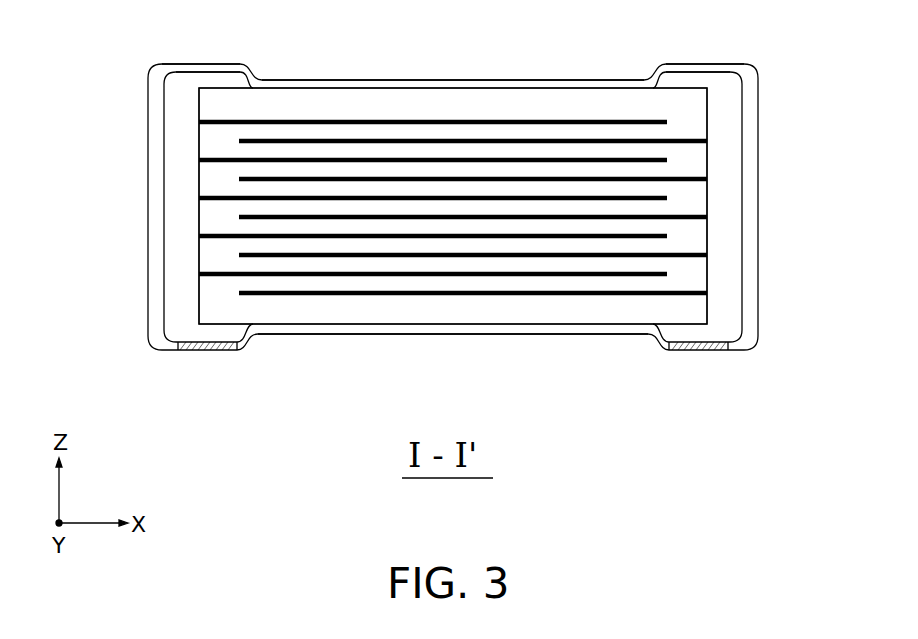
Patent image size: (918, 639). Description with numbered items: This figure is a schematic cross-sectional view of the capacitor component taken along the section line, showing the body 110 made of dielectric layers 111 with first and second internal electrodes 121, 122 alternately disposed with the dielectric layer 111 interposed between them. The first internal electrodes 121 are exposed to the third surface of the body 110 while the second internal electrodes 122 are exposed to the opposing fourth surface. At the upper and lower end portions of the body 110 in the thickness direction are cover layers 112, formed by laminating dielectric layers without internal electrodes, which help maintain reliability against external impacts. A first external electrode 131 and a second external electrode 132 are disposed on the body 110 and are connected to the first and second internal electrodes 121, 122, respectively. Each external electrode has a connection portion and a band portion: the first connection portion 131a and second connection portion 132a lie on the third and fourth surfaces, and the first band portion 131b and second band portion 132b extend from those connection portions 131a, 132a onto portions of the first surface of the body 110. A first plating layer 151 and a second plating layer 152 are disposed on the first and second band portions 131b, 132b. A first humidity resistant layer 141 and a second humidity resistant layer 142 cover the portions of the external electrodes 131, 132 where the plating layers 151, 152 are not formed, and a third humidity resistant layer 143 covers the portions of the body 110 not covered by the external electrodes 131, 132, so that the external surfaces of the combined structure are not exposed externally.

The body 110 is at (600, 86).
The dielectric layer 111 is at (254, 130).
The cover layer 112 is at (528, 110).
The first internal electrode 121 is at (303, 120).
The second internal electrode 122 is at (365, 139).
The first external electrode 131 is at (138, 207).
The first connection portion 131a is at (187, 184).
The first band portion 131b is at (208, 334).
The second external electrode 132 is at (769, 207).
The second connection portion 132a is at (723, 184).
The second band portion 132b is at (698, 334).
The first humidity resistant layer 141 is at (207, 72).
The second humidity resistant layer 142 is at (689, 72).
The third humidity resistant layer 143 is at (455, 80).
The first plating layer 151 is at (207, 350).
The second plating layer 152 is at (699, 350).